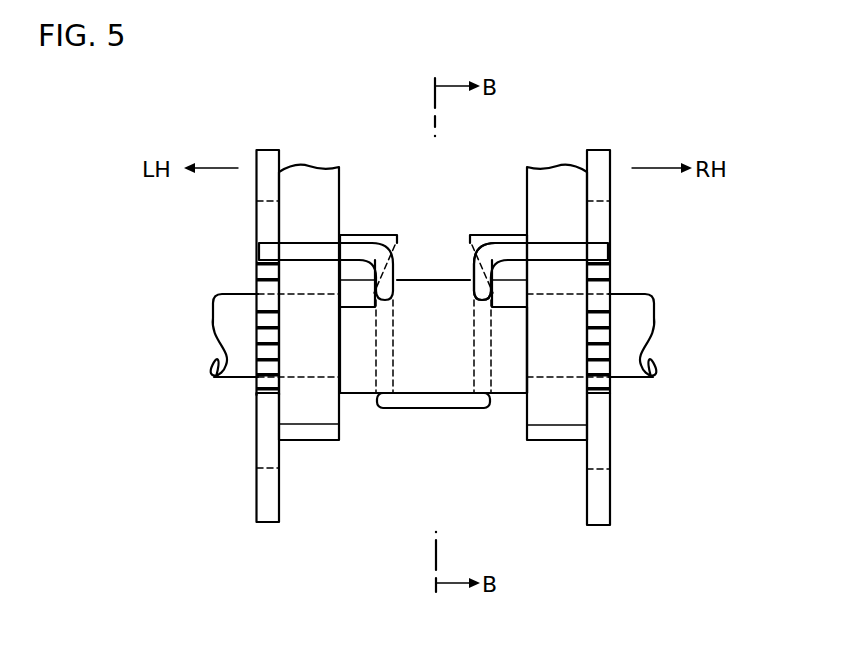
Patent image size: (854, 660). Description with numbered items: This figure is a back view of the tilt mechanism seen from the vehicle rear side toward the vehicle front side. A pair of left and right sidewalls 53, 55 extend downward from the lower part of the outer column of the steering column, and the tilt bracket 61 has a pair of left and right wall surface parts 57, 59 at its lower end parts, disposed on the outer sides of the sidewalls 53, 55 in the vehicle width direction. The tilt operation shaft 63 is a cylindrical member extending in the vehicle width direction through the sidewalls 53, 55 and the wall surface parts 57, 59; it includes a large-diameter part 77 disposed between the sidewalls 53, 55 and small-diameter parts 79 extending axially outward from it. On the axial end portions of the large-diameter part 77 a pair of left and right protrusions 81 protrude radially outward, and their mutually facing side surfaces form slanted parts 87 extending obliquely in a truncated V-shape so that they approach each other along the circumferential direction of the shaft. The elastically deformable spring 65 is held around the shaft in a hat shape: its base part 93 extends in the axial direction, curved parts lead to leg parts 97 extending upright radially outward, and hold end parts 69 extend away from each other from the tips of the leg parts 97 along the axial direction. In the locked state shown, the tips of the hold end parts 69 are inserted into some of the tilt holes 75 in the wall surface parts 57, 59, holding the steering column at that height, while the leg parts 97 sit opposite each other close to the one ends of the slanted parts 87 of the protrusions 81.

The sidewall 53 is at (312, 408).
The sidewall 55 is at (553, 408).
The wall surface part 57 is at (265, 500).
The wall surface part 59 is at (603, 500).
The tilt bracket 61 is at (263, 148).
The tilt operation shaft 63 is at (632, 313).
The spring 65 is at (397, 409).
The hold end part 69 is at (557, 253).
The tilt hole 75 is at (265, 389).
The large-diameter part 77 is at (508, 378).
The small-diameter part 79 is at (235, 322).
The protrusion 81 is at (495, 233).
The slanted part 87 is at (470, 250).
The base part 93 is at (447, 402).
The leg part 97 is at (478, 286).